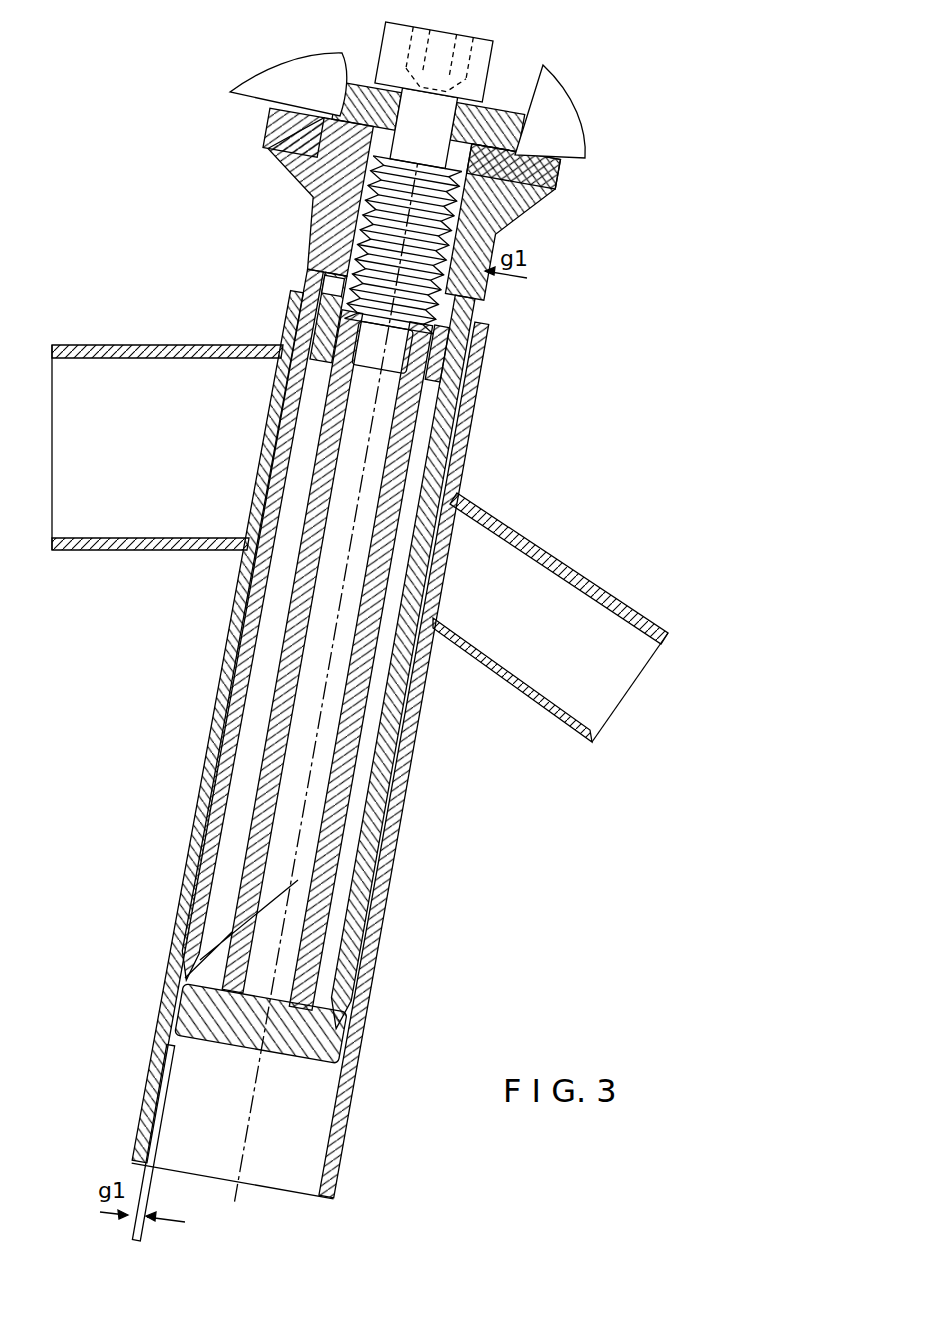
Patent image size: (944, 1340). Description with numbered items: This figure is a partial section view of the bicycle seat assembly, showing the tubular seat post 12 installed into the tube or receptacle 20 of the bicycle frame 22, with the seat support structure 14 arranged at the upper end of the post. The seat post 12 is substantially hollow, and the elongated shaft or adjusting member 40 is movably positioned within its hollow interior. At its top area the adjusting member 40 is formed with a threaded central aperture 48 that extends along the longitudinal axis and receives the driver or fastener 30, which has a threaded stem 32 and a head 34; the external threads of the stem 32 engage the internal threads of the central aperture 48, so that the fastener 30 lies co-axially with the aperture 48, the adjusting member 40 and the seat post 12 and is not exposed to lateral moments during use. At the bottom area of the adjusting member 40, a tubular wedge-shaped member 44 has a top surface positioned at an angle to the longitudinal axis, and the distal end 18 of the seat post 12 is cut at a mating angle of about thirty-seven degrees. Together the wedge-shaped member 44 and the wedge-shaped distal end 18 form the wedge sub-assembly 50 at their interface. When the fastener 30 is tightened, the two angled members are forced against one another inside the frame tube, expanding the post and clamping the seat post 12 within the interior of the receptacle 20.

The tubular seat post 12 is at (440, 454).
The seat support structure 14 is at (565, 178).
The distal end of the seat post 18 is at (193, 933).
The tube or receptacle 20 is at (470, 402).
The bicycle frame 22 is at (110, 345).
The driver or fastener 30 is at (410, 133).
The threaded stem 32 is at (400, 333).
The head 34 is at (477, 45).
The shaft or adjusting member 40 is at (356, 710).
The wedge-shaped member 44 is at (345, 967).
The threaded central aperture 48 is at (470, 222).
The wedge sub-assembly 50 is at (302, 877).